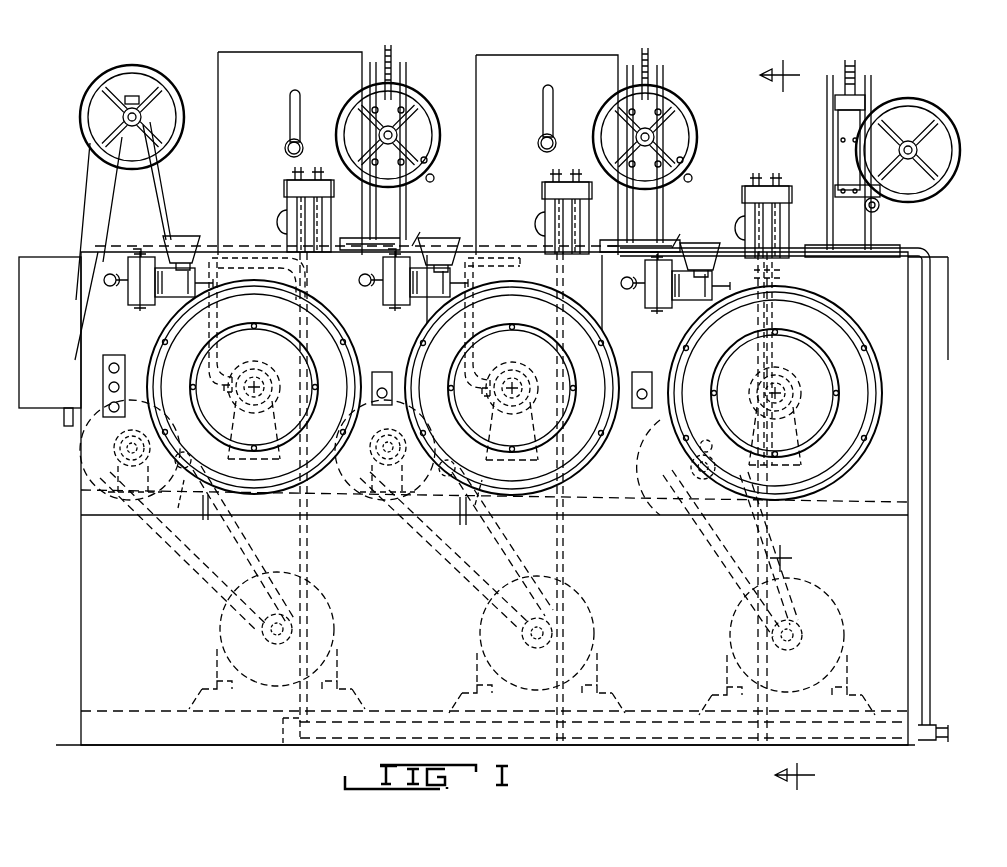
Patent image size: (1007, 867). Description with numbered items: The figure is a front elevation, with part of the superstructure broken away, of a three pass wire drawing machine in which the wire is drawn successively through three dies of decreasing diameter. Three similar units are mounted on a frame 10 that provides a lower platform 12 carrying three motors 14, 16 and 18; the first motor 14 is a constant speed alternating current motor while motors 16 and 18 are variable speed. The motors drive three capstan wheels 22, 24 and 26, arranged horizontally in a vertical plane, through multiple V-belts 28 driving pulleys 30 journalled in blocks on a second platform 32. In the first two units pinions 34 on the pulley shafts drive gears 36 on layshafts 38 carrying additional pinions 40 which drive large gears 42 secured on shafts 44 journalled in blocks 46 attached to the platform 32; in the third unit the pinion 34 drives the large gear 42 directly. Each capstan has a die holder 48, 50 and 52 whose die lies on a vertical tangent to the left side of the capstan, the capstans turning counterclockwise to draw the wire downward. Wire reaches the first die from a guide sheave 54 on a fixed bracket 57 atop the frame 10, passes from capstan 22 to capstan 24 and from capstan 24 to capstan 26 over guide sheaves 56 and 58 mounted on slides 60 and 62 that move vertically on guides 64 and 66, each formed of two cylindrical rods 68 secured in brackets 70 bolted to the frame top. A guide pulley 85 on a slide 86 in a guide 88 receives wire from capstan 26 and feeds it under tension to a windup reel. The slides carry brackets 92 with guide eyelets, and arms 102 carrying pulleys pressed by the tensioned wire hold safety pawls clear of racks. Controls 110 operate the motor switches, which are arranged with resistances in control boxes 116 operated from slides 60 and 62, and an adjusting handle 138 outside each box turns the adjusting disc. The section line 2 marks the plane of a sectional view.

The frame 10 is at (92, 611).
The lower platform 12 is at (106, 712).
The first motor 14 is at (234, 637).
The second motor 16 is at (498, 635).
The third motor 18 is at (746, 627).
The section line 2- 2 is at (792, 415).
The capstan wheel 22 is at (168, 344).
The capstan wheel 24 is at (420, 347).
The capstan wheel 26 is at (682, 342).
The V-belts 28 is at (160, 539).
The pulleys 30 is at (78, 473).
The second platform 32 is at (90, 515).
The pinions 34 is at (82, 446).
The gears 36 is at (331, 522).
The layshafts 38 is at (325, 511).
The pinions 40 is at (411, 487).
The large gears 42 is at (675, 435).
The shafts 44 is at (268, 377).
The blocks 46 is at (258, 367).
The die holder 48 is at (181, 237).
The die holder 50 is at (440, 238).
The die holder 52 is at (700, 243).
The guide sheave 54 is at (80, 114).
The guide sheave 56 is at (425, 98).
The fixed bracket 57 is at (120, 193).
The guide sheave 58 is at (698, 120).
The slide 60 is at (435, 178).
The slide 62 is at (694, 174).
The guide 64 is at (412, 64).
The guide 66 is at (668, 66).
The cylindrical rods 68 is at (404, 211).
The brackets 70 is at (548, 227).
The guide pulley 85 is at (922, 105).
The slide 86 is at (845, 157).
The guide 88 is at (832, 117).
The brackets 92 is at (416, 124).
The arms 102 is at (880, 204).
The controls 110 is at (112, 356).
The control boxes 116 is at (226, 57).
The adjusting handle 138 is at (286, 121).